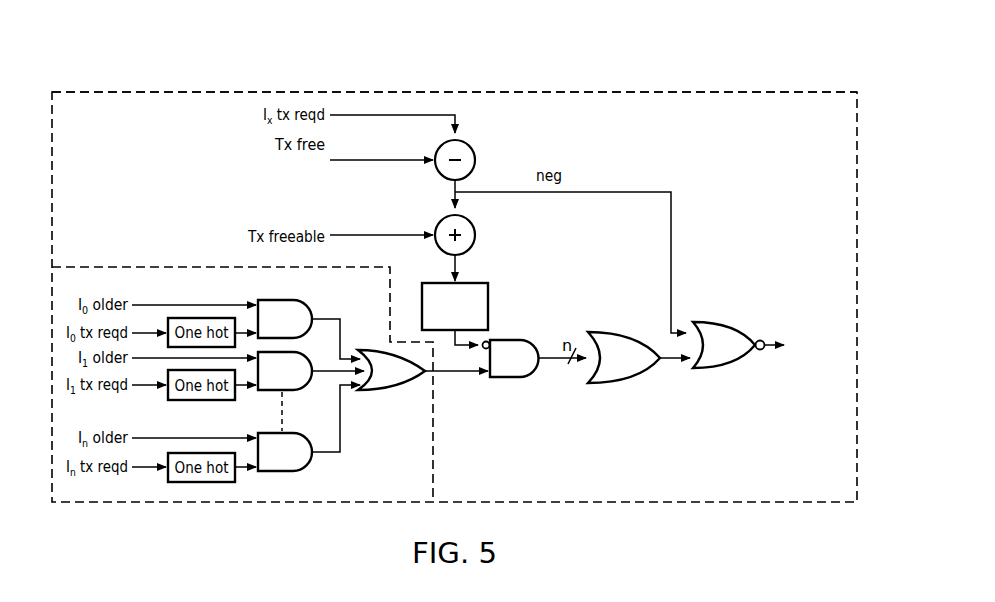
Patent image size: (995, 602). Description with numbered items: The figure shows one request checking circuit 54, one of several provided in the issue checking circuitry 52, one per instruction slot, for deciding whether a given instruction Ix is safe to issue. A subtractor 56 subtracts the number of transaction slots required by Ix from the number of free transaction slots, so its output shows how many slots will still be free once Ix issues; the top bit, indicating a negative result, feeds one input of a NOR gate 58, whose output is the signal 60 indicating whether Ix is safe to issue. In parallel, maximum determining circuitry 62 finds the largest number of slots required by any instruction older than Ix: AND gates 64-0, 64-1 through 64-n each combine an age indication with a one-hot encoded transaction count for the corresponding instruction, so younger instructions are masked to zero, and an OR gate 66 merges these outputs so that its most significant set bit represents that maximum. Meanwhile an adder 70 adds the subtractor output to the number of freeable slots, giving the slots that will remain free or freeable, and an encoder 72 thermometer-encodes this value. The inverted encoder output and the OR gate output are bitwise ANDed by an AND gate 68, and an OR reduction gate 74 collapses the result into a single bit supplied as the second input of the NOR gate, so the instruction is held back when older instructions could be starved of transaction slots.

The issue checking circuitry 52 is at (86, 80).
The request checking circuit 54 is at (455, 92).
The subtractor 56 is at (477, 163).
The NOR gate 58 is at (735, 340).
The safe to issue signal 60 is at (771, 352).
The maximum determining circuitry 62 is at (435, 473).
The AND gate 64-0 is at (290, 310).
The AND gate 64-1 is at (290, 374).
The AND gate 64-n is at (298, 455).
The OR gate 66 is at (410, 375).
The AND gate 68 is at (522, 353).
The adder 70 is at (477, 238).
The thermometer encoder 72 is at (488, 291).
The OR reduction gate 74 is at (640, 376).